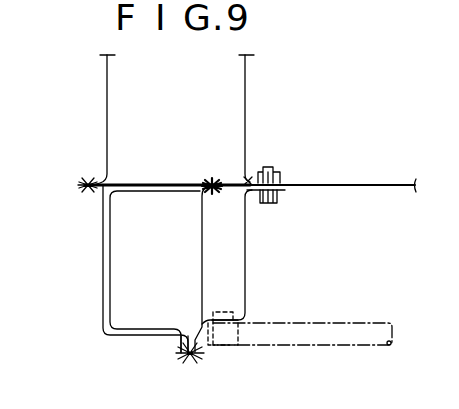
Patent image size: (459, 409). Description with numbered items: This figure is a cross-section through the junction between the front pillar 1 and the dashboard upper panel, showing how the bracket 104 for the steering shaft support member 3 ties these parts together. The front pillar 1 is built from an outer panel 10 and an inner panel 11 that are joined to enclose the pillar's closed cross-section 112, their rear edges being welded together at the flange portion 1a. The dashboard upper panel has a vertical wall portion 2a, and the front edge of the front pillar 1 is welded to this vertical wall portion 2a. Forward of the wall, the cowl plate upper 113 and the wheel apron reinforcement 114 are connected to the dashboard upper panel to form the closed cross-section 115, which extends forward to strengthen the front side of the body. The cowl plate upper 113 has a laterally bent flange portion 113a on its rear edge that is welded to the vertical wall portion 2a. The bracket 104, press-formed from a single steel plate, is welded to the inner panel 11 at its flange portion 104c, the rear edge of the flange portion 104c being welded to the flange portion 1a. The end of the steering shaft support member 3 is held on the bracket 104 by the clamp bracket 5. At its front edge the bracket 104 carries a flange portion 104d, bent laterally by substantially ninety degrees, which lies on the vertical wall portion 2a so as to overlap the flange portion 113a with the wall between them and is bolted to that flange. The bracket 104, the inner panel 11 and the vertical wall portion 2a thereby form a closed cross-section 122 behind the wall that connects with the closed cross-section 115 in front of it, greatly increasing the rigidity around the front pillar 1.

The front pillar 1 is at (157, 269).
The flange portion of the front pillar 1a is at (182, 356).
The vertical wall portion 2a is at (338, 183).
The steering shaft support member 3 is at (363, 323).
The clamp bracket 5 is at (236, 348).
The outer panel 10 is at (151, 269).
The inner panel 11 is at (203, 248).
The bracket 104 is at (279, 257).
The flange portion of the bracket 104c is at (201, 357).
The flange portion of the extension 104d is at (285, 190).
The channel bracket 112 is at (110, 246).
The cowl plate upper 113 is at (246, 97).
The flange portion of the cowl plate upper 113a is at (250, 176).
The wheel apron reinforcement 114 is at (107, 100).
The closed cross-section 115 is at (198, 113).
The closed cross-section 122 is at (255, 291).